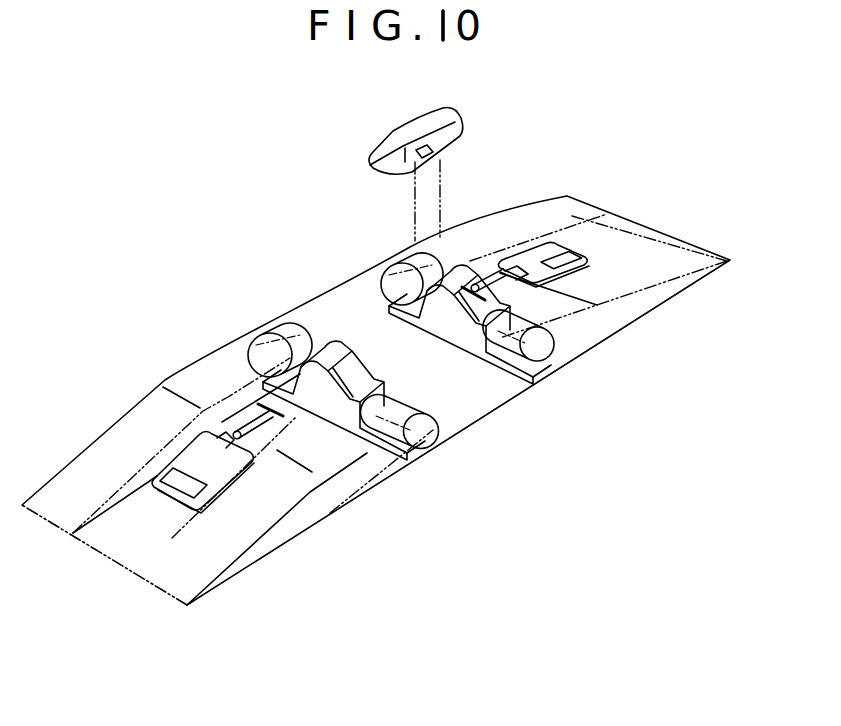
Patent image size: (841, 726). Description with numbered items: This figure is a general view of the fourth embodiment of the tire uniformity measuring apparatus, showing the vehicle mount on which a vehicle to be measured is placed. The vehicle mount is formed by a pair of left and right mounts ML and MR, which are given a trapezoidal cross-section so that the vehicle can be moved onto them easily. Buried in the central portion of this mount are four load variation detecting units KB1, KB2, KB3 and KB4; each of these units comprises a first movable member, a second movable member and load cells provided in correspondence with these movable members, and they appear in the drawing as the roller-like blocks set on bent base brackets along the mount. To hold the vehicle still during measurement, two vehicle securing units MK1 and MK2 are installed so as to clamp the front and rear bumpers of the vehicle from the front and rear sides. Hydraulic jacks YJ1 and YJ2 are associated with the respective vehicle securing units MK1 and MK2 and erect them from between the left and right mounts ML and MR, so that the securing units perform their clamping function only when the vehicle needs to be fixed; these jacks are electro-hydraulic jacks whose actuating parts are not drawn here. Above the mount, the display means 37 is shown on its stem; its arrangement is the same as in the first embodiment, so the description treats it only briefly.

The display means 37 is at (390, 124).
The load variation detecting unit KB1 is at (250, 328).
The load variation detecting unit KB2 is at (420, 434).
The load variation detecting unit KB3 is at (383, 266).
The load variation detecting unit KB4 is at (548, 346).
The vehicle securing unit MK1 is at (216, 476).
The vehicle securing unit MK2 is at (553, 268).
The hydraulic jack YJ1 is at (256, 403).
The hydraulic jack YJ2 is at (478, 283).
The right mount MR is at (53, 512).
The left mount ML is at (158, 578).